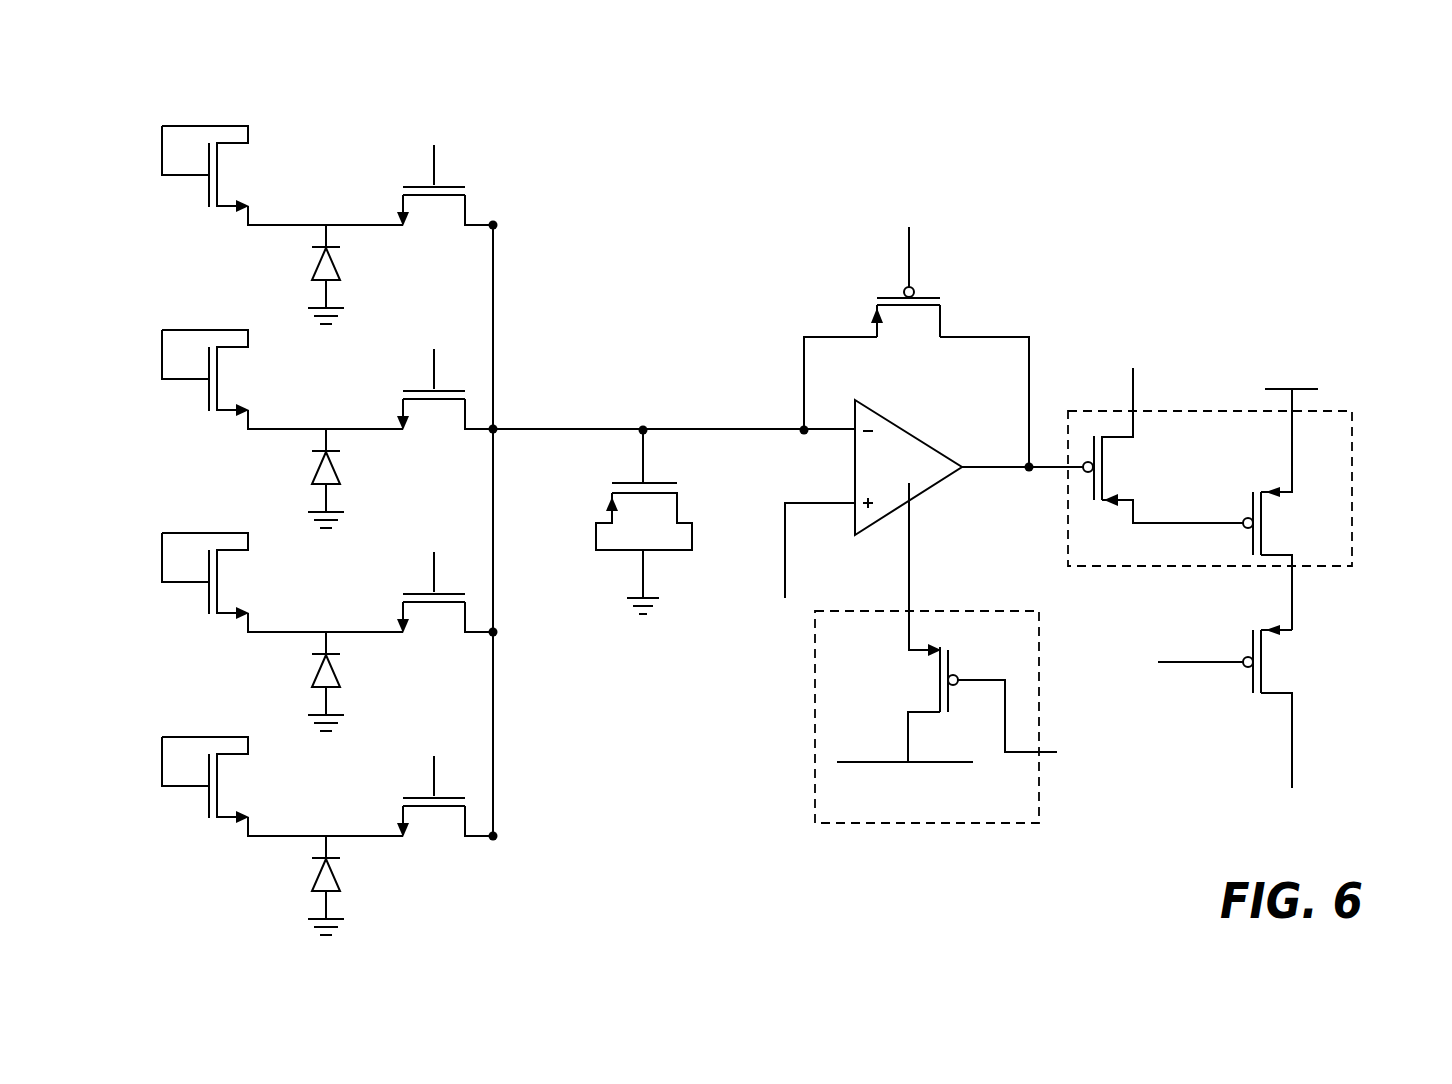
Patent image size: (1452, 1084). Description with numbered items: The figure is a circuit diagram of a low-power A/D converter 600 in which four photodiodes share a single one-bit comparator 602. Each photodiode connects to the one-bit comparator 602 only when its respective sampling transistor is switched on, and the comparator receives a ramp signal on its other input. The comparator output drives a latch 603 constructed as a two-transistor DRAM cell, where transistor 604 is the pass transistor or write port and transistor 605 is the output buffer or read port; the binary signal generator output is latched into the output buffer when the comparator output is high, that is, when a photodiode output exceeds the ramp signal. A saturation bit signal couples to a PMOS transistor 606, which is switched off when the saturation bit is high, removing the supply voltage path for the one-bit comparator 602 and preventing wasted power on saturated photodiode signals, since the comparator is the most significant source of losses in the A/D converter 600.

The A/D converter 600 is at (735, 860).
The one-bit comparator 602 is at (906, 431).
The latch 603 is at (1245, 485).
The pass transistor 604 is at (1126, 497).
The output buffer 605 is at (1276, 553).
The PMOS transistor 606 is at (948, 661).